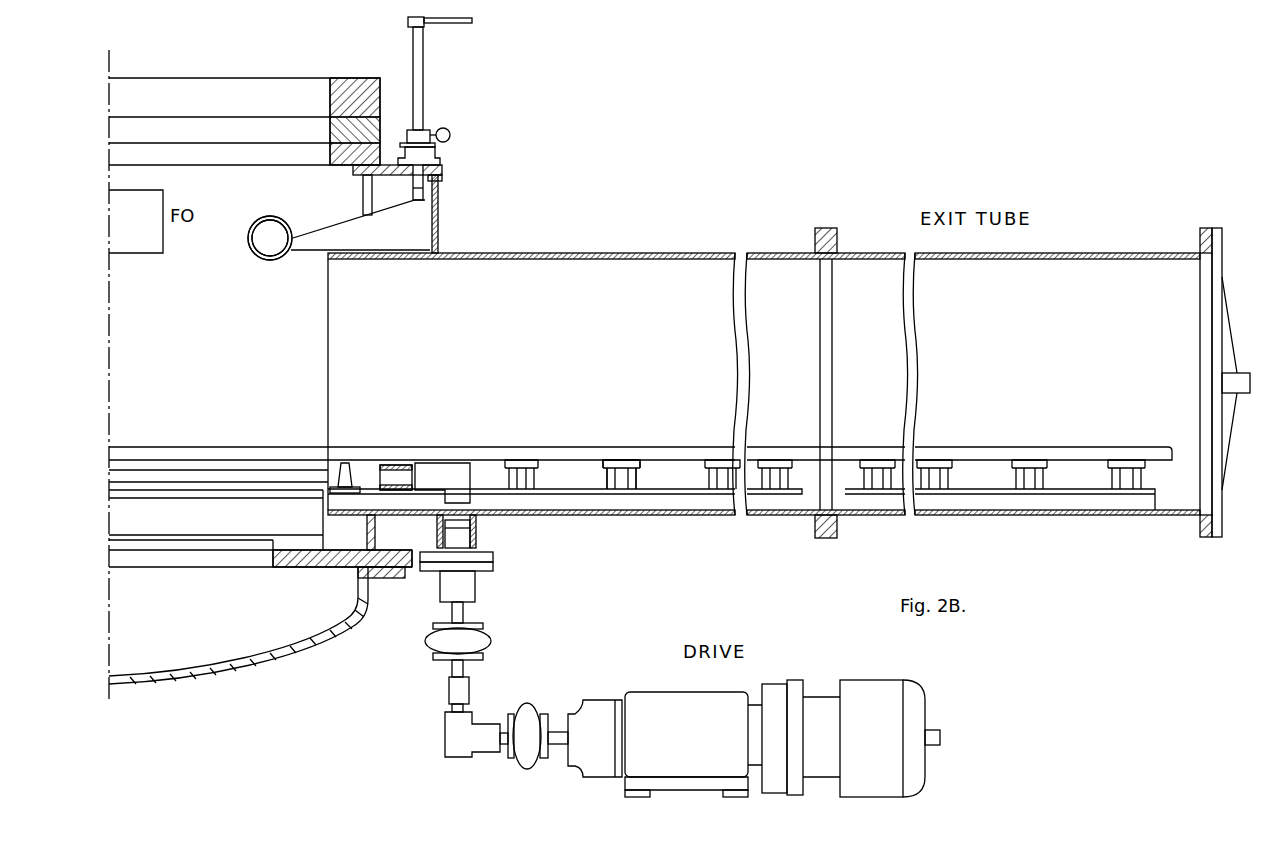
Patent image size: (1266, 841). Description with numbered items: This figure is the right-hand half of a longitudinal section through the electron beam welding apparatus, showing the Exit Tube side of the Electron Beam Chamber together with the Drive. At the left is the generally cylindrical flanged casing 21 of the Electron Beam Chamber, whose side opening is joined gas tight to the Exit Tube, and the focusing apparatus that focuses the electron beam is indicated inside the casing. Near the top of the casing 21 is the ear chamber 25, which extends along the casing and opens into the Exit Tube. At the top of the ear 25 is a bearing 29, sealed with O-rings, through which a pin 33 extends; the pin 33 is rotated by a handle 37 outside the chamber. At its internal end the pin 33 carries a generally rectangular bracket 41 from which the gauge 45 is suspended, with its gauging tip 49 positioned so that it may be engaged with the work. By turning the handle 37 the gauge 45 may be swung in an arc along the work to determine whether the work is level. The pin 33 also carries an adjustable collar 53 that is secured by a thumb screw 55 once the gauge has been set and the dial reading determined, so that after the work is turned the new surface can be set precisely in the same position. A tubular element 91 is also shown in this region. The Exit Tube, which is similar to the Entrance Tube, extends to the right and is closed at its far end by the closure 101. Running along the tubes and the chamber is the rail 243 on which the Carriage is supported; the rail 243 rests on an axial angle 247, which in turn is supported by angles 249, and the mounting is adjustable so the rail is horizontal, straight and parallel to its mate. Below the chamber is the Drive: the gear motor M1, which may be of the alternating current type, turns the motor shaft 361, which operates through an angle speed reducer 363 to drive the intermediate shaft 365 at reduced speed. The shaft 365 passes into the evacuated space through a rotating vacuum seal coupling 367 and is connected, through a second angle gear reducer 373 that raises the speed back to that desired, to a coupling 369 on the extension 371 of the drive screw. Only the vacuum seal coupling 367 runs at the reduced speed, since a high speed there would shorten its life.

The casing 21 is at (294, 188).
The ear chamber 25 is at (440, 176).
The bearing 29 is at (440, 156).
The pin 33 is at (422, 92).
The handle 37 is at (453, 22).
The bracket 41 is at (360, 225).
The gauge 45 is at (262, 222).
The gauging tip 49 is at (270, 258).
The adjustable collar 53 is at (410, 136).
The thumb screw 55 is at (447, 129).
The pipe 91 is at (276, 233).
The closure 101 is at (1222, 277).
The rail 243 is at (585, 457).
The angle 247 is at (608, 488).
The angle 249 is at (636, 476).
The motor shaft 361 is at (553, 730).
The angle speed reducer 363 is at (445, 729).
The intermediate shaft 365 is at (469, 688).
The rotating vacuum seal coupling 367 is at (475, 583).
The coupling 369 is at (395, 470).
The extension 371 is at (316, 477).
The second angle gear reducer 373 is at (480, 438).
The gear motor M1 is at (715, 700).